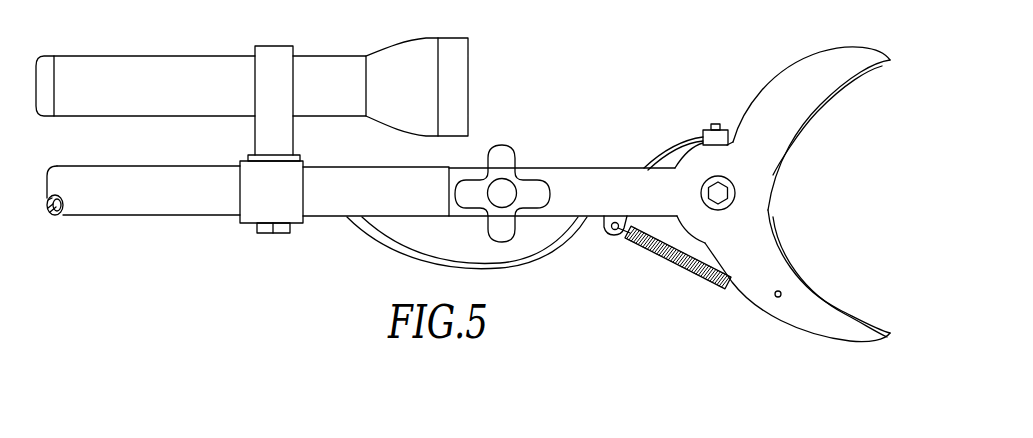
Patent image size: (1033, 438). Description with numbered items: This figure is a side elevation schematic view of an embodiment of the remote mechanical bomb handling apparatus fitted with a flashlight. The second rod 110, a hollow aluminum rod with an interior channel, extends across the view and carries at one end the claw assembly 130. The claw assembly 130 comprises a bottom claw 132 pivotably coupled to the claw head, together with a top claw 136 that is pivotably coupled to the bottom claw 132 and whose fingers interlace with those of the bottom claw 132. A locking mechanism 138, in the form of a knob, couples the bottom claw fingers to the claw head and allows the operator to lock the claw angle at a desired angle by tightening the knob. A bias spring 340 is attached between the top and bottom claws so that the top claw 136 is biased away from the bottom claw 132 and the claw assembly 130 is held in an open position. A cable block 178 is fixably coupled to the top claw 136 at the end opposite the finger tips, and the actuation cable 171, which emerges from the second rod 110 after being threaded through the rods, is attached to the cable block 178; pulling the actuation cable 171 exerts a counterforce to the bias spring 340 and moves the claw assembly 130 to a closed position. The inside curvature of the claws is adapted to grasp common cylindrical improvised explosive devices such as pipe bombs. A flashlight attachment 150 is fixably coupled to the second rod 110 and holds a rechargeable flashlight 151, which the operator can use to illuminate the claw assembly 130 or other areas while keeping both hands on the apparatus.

The second rod 110 is at (150, 208).
The claw assembly 130 is at (632, 260).
The bottom claw 132 is at (811, 117).
The top claw 136 is at (797, 289).
The locking mechanism 138 is at (496, 146).
The flashlight attachment 150 is at (246, 225).
The flashlight 151 is at (322, 56).
The actuation cable 171 is at (522, 264).
The cable block 178 is at (723, 130).
The bias spring 340 is at (672, 266).